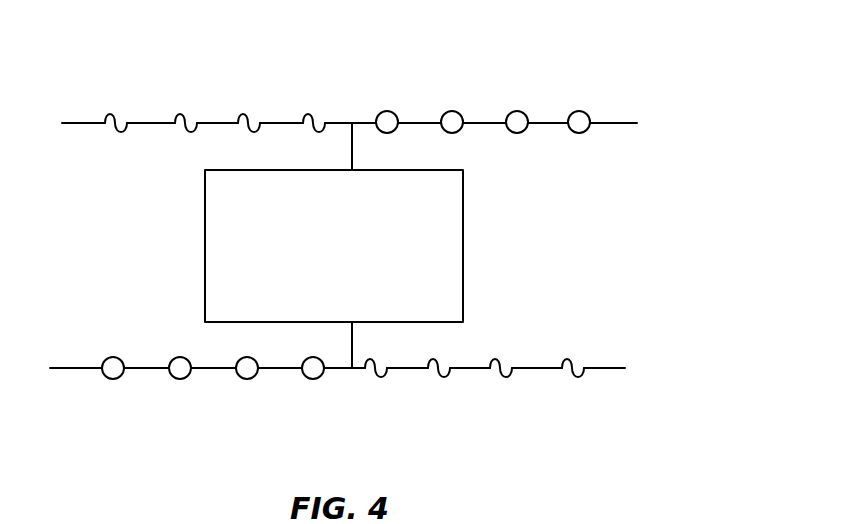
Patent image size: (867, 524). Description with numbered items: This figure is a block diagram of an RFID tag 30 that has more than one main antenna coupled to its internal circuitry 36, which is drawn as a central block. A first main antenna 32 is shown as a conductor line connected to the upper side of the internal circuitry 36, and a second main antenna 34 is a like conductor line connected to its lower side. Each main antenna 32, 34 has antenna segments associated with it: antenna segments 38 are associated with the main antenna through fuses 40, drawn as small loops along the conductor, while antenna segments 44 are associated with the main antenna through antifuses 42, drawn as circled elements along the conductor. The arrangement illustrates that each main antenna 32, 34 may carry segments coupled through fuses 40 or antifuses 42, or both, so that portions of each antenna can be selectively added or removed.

The RFID tag 30 is at (657, 154).
The main antenna 32 is at (352, 144).
The main antenna 34 is at (352, 334).
The internal circuitry 36 is at (450, 242).
The antenna segments 38 is at (282, 125).
The fuses 40 is at (309, 124).
The antifuses 42 is at (578, 112).
The antenna segments 44 is at (423, 125).